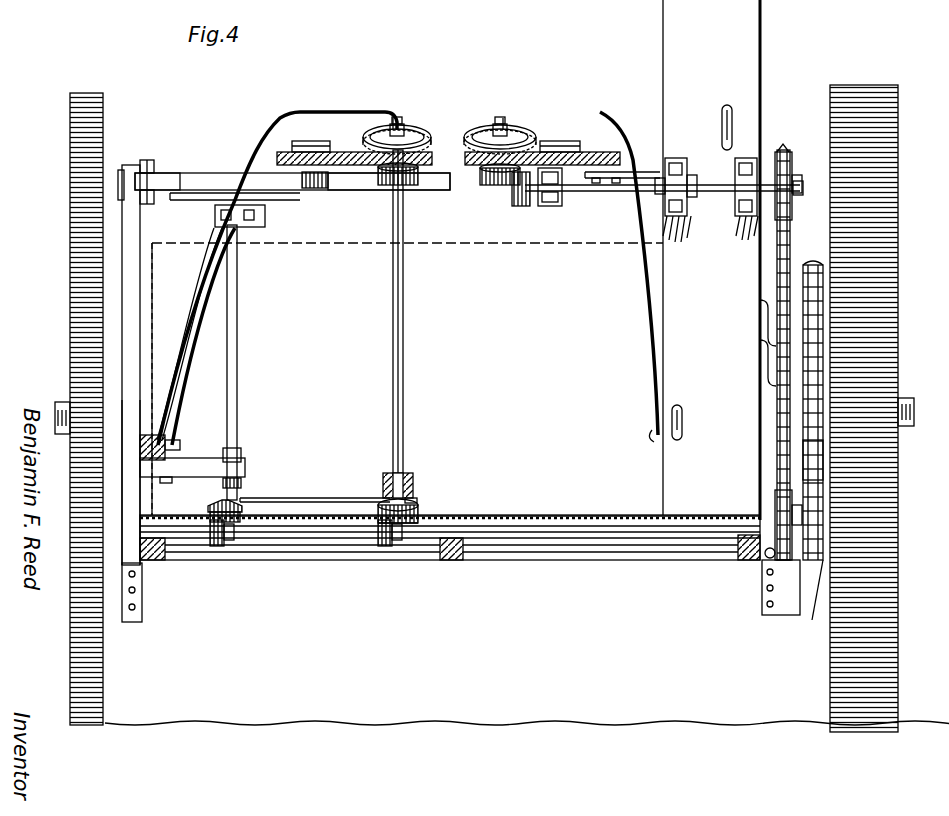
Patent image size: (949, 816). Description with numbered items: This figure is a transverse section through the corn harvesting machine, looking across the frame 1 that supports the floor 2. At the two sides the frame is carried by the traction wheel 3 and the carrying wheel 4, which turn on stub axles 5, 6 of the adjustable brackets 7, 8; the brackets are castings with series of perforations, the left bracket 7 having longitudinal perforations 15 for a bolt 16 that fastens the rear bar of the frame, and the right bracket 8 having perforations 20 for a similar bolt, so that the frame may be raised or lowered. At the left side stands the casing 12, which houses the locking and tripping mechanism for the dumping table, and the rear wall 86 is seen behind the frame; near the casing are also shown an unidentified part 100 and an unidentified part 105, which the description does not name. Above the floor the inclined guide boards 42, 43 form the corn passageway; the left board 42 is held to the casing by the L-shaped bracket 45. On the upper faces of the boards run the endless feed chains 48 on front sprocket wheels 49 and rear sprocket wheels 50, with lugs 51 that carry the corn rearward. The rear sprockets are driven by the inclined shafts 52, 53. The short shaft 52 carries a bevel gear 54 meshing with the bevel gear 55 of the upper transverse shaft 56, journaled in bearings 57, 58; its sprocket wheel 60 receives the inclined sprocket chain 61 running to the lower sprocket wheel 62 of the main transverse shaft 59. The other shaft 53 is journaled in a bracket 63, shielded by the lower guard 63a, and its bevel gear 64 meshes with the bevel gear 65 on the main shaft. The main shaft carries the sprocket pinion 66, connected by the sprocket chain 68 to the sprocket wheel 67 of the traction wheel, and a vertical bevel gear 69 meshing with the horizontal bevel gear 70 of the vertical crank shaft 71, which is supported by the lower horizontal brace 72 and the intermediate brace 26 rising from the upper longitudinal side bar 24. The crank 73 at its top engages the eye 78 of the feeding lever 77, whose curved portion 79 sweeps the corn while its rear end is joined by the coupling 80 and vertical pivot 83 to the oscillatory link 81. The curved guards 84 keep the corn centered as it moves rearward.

The frame 1 is at (158, 560).
The floor 2 is at (330, 515).
The traction wheel 3 is at (875, 270).
The carrying wheel 4 is at (70, 151).
The stub axle 5 is at (912, 408).
The stub axle 6 is at (60, 410).
The adjustable bracket 7 is at (760, 432).
The adjustable bracket 8 is at (124, 408).
The casing 12 is at (663, 40).
The perforations 15 is at (766, 612).
The bolt 16 is at (765, 556).
The perforations 20 is at (142, 606).
The upper longitudinal side bar 24 is at (176, 428).
The intermediate brace 26 is at (168, 296).
The guide board 42 is at (578, 152).
The guide board 43 is at (325, 152).
The L-shaped bracket 45 is at (634, 172).
The endless feed chains 48 is at (406, 128).
The front sprocket wheels 49 is at (386, 186).
The rear sprocket wheels 50 is at (392, 122).
The lugs 51 is at (322, 141).
The inclined shaft 52 is at (492, 132).
The inclined shaft 53 is at (393, 282).
The bevel gear 54 is at (495, 186).
The bevel gear 55 is at (520, 206).
The upper transverse shaft 56 is at (592, 191).
The bearing 57 is at (550, 206).
The bearing 58 is at (674, 160).
The main transverse shaft 59 is at (320, 540).
The sprocket wheel 60 is at (790, 160).
The inclined sprocket chain 61 is at (791, 260).
The lower sprocket wheel 62 is at (778, 506).
The bracket 63 is at (413, 482).
The lower guard 63a is at (312, 497).
The bevel gear 64 is at (420, 510).
The bevel gear 65 is at (386, 548).
The sprocket pinion 66 is at (820, 565).
The sprocket wheel 67 is at (824, 456).
The sprocket chain 68 is at (823, 342).
The vertical bevel gear 69 is at (218, 548).
The horizontal bevel gear 70 is at (242, 512).
The vertical crank shaft 71 is at (238, 416).
The lower horizontal brace 72 is at (192, 458).
The crank 73 is at (293, 200).
The feeding lever 77 is at (215, 173).
The eye 78 is at (322, 190).
The curved portion 79 is at (368, 190).
The coupling 80 is at (172, 173).
The oscillatory link 81 is at (135, 212).
The vertical pivot 83 is at (147, 160).
The curved guards 84 is at (262, 126).
The rear wall 86 is at (407, 379).
The pin 100 is at (683, 422).
The pin 105 is at (733, 137).